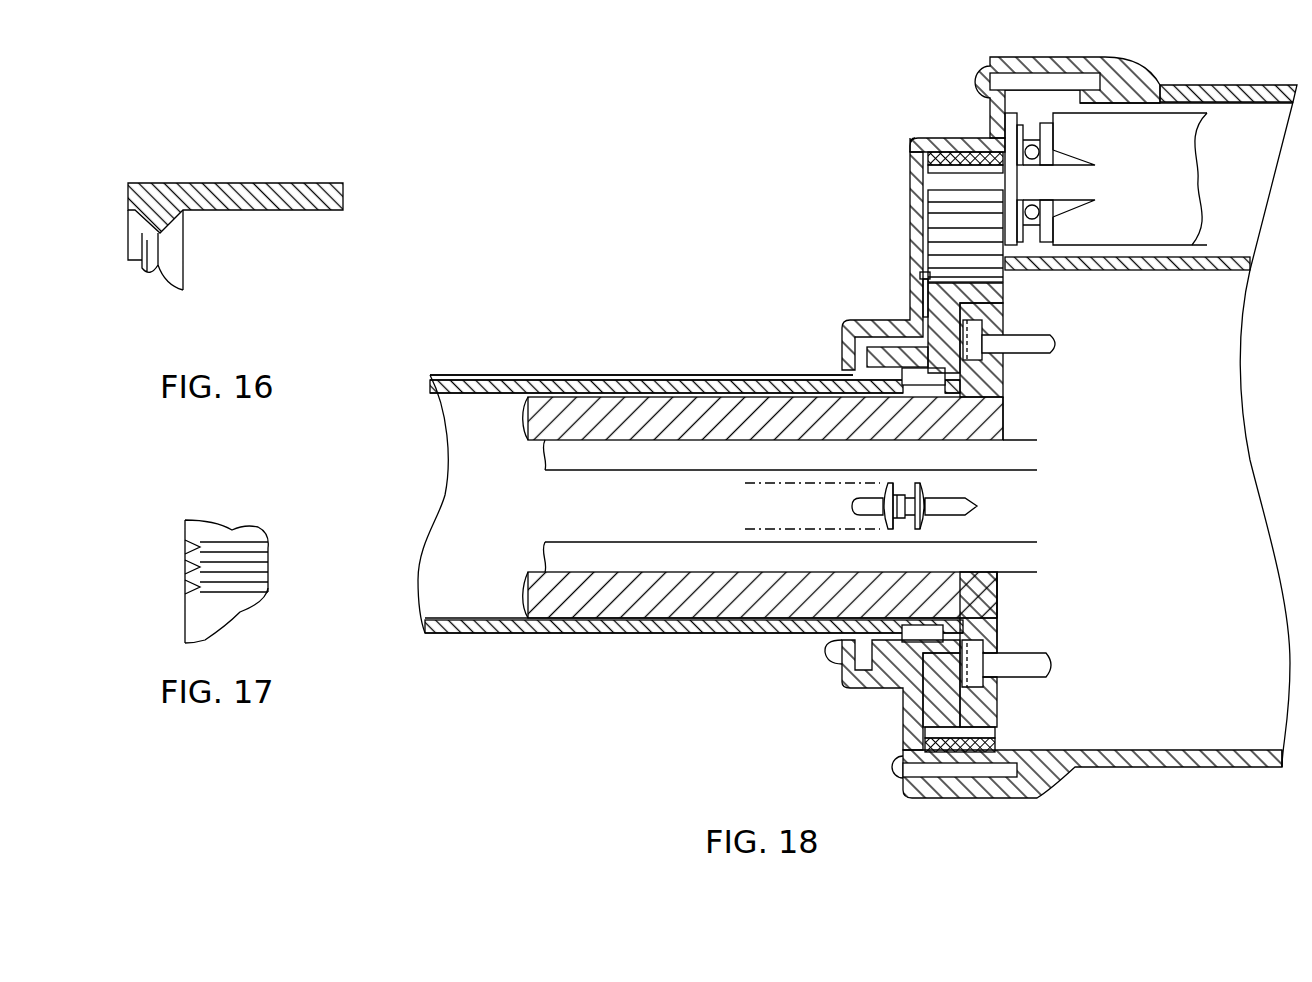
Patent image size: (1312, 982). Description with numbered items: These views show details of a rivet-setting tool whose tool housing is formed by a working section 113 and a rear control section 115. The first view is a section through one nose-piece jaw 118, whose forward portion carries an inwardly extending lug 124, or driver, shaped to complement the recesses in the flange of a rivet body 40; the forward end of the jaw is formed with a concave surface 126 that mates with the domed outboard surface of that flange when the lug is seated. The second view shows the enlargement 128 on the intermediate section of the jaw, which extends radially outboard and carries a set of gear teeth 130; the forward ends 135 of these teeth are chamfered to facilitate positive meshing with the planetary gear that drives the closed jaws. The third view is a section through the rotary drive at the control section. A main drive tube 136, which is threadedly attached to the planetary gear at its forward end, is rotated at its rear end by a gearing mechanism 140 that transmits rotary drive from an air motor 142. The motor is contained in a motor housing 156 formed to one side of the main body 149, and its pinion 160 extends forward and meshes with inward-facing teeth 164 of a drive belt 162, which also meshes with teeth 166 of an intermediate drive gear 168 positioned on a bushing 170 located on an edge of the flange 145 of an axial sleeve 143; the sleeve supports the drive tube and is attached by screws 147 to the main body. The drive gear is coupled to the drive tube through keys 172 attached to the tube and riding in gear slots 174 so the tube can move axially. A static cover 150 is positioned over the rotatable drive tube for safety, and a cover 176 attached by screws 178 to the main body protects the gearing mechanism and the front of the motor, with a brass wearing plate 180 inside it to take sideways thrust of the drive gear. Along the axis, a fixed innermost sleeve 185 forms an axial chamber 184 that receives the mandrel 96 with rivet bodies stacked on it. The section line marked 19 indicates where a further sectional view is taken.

In FIG. 18, the section line 19- 19 is at (958, 70).
In FIG. 18, the rivet body 40 is at (947, 488).
In FIG. 18, the mandrel 96 is at (998, 506).
In FIG. 18, the working section 113 is at (737, 366).
In FIG. 18, the control section 115 is at (1242, 778).
In FIG. 16, the jaw 118 is at (282, 206).
In FIG. 16, the lug 124 is at (150, 270).
In FIG. 16, the concave surface 126 is at (133, 215).
In FIG. 17, the enlargement 128 is at (238, 528).
In FIG. 17, the gear teeth 130 is at (257, 562).
In FIG. 17, the forward ends 135 is at (190, 555).
In FIG. 18, the main drive tube 136 is at (692, 386).
In FIG. 18, the gearing mechanism 140 is at (838, 295).
In FIG. 18, the air motor 142 is at (1166, 100).
In FIG. 18, the axial sleeve 143 is at (678, 580).
In FIG. 18, the flange 145 is at (992, 688).
In FIG. 18, the screws 147 is at (983, 650).
In FIG. 18, the main body 149 is at (1098, 760).
In FIG. 18, the static cover 150 is at (592, 376).
In FIG. 18, the motor housing 156 is at (1235, 92).
In FIG. 18, the pinion 160 is at (957, 180).
In FIG. 18, the drive belt 162 is at (930, 156).
In FIG. 18, the teeth 164 is at (950, 227).
In FIG. 18, the teeth 166 is at (917, 275).
In FIG. 18, the drive gear 168 is at (953, 350).
In FIG. 18, the bushing 170 is at (1005, 306).
In FIG. 18, the keys 172 is at (912, 386).
In FIG. 18, the gear slots 174 is at (872, 373).
In FIG. 18, the cover 176 is at (908, 187).
In FIG. 18, the screws 178 is at (976, 84).
In FIG. 18, the brass wearing plate 180 is at (922, 300).
In FIG. 18, the axial chamber 184 is at (663, 471).
In FIG. 18, the fixed innermost sleeve 185 is at (620, 545).